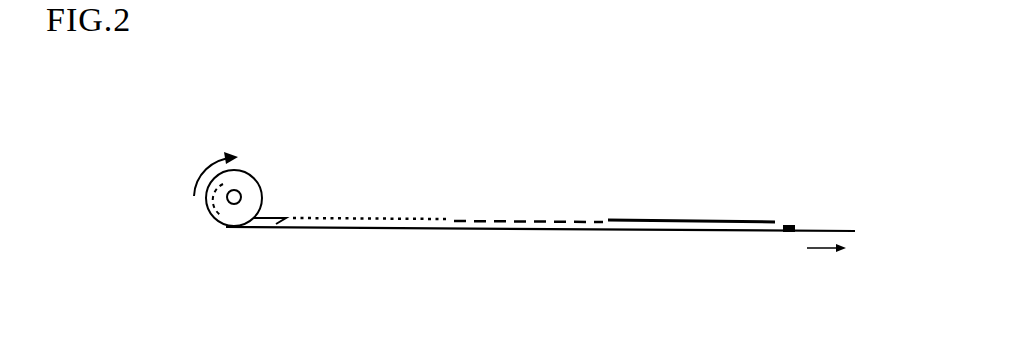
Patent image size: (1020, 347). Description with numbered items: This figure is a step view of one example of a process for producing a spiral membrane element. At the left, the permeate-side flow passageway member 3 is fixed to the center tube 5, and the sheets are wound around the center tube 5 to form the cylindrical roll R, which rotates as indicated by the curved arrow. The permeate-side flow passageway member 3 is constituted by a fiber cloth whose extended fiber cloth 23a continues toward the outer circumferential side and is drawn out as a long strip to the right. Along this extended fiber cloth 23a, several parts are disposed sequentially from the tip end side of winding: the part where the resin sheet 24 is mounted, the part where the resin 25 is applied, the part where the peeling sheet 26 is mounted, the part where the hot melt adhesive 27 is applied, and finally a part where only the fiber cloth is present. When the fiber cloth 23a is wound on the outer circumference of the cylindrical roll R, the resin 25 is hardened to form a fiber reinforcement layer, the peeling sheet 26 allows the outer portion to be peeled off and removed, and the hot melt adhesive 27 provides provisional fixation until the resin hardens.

The permeate-side flow passageway member 3 is at (213, 210).
The center tube 5 is at (239, 191).
The cylindrical roll R is at (286, 190).
The fiber cloth 23a is at (328, 228).
The resin sheet 24 is at (393, 216).
The resin 25 is at (500, 220).
The peeling sheet 26 is at (677, 219).
The hot melt adhesive 27 is at (790, 224).